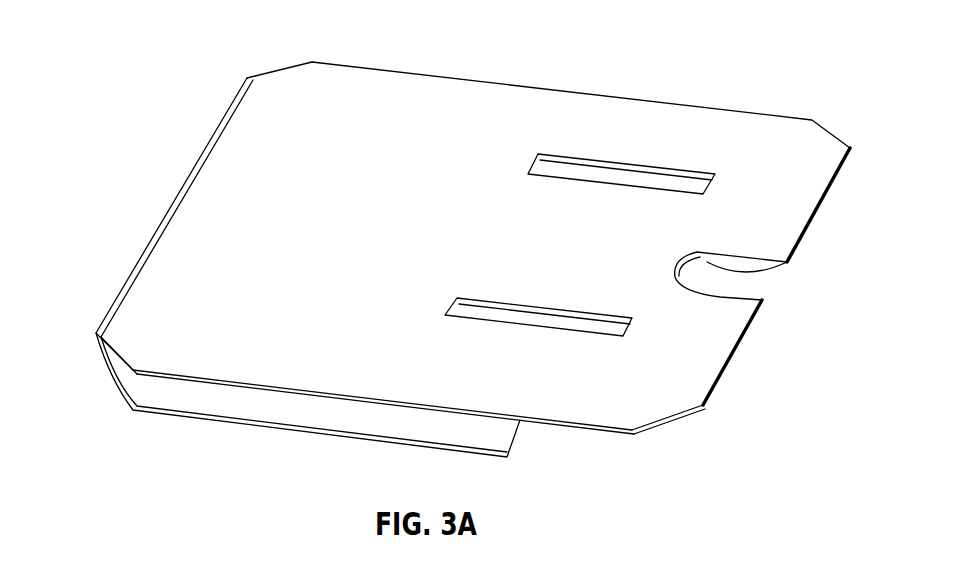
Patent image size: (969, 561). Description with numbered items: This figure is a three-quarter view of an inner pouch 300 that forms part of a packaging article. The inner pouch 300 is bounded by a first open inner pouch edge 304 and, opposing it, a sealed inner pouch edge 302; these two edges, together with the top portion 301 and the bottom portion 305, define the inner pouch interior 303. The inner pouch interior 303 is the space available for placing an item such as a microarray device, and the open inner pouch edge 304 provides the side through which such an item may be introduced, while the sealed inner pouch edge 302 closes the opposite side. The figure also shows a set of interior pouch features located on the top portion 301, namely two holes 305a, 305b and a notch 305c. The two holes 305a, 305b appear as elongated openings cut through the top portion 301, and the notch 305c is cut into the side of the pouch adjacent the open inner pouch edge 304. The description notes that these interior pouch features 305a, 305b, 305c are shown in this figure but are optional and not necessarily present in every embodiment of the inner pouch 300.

The inner pouch 300 is at (128, 64).
The top portion 301 is at (283, 63).
The sealed inner pouch edge 302 is at (117, 388).
The inner pouch interior 303 is at (670, 424).
The first open inner pouch edge 304 is at (833, 134).
The bottom portion 305 is at (268, 432).
The hole 305a is at (600, 163).
The hole 305b is at (520, 307).
The notch 305c is at (789, 250).